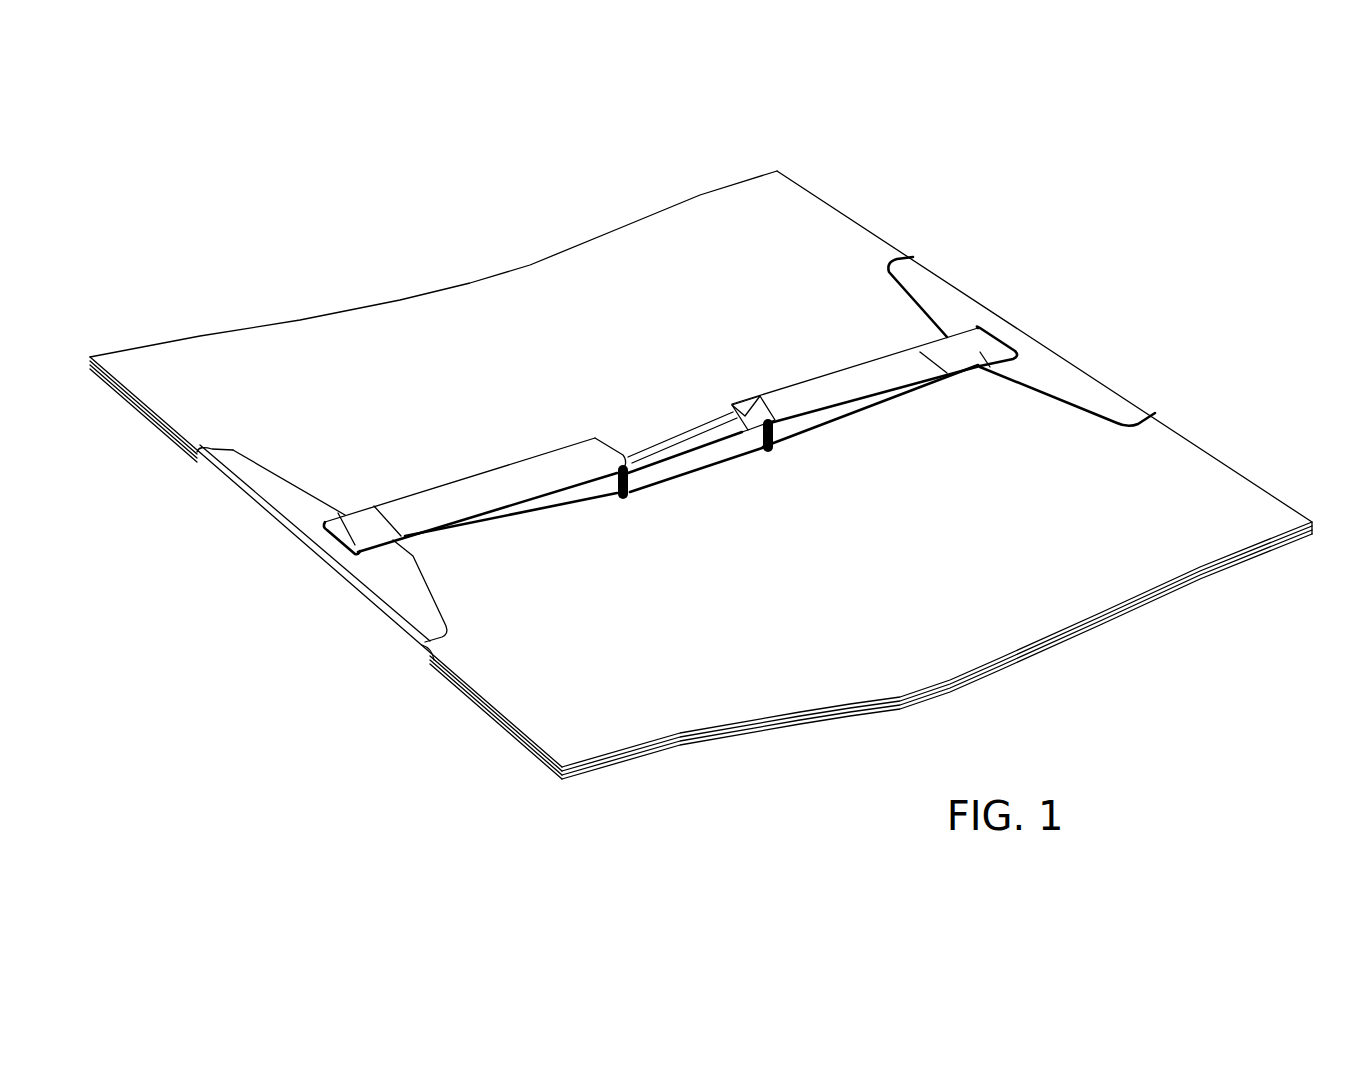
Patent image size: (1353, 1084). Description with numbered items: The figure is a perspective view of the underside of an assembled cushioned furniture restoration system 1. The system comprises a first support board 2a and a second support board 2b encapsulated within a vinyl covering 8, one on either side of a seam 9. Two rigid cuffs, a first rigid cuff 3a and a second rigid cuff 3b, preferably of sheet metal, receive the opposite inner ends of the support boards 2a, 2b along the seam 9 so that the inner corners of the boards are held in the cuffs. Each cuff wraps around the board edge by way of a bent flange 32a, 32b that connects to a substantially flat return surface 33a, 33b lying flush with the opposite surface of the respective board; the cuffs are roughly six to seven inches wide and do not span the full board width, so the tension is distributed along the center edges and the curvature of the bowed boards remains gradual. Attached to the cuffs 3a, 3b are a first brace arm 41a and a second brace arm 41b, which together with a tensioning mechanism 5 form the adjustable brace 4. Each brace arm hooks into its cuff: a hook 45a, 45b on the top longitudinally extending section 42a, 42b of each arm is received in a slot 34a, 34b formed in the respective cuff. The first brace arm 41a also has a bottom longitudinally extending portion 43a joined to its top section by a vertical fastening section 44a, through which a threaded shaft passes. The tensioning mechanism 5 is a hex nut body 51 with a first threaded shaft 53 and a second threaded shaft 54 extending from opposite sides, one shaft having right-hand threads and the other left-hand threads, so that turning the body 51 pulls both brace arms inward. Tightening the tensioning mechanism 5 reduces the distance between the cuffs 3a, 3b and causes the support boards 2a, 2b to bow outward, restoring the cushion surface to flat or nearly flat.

The furniture restoration system 1 is at (333, 259).
The first support board 2a is at (552, 745).
The second support board 2b is at (155, 358).
The first rigid cuff 3a is at (944, 273).
The second rigid cuff 3b is at (432, 657).
The adjustable brace 4 is at (670, 365).
The tensioning mechanism 5 is at (657, 432).
The vinyl covering 8 is at (1250, 497).
The seam 9 is at (702, 442).
The bent flange 32a is at (1140, 403).
The bent flange 32b is at (226, 493).
The second substantially flat return surface 33a is at (1082, 380).
The second substantially flat return surface 33b is at (425, 618).
The slot 34a is at (999, 339).
The slot 34b is at (352, 506).
The first brace arm 41a is at (818, 388).
The second brace arm 41b is at (467, 487).
The top longitudinally extending section 42a is at (813, 447).
The top longitudinally extending section 42b is at (508, 521).
The bottom longitudinally extending portion 43a is at (908, 377).
The vertical fastening section 44a is at (765, 457).
The hook 45a is at (980, 357).
The hook 45b is at (348, 533).
The hex nut body 51 is at (745, 467).
The first threaded shaft 53 is at (753, 420).
The second threaded shaft 54 is at (622, 461).